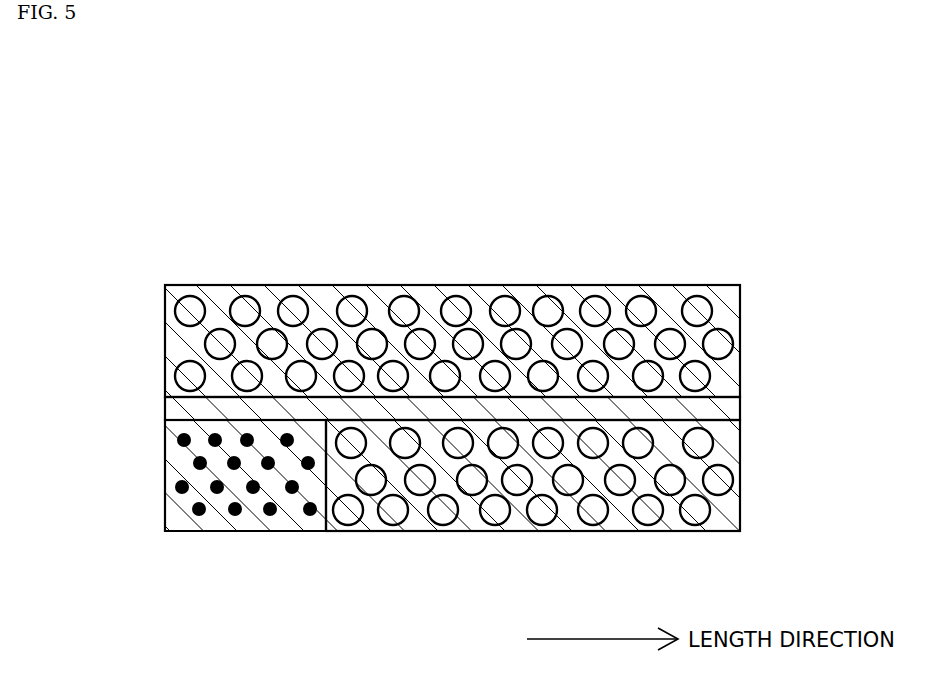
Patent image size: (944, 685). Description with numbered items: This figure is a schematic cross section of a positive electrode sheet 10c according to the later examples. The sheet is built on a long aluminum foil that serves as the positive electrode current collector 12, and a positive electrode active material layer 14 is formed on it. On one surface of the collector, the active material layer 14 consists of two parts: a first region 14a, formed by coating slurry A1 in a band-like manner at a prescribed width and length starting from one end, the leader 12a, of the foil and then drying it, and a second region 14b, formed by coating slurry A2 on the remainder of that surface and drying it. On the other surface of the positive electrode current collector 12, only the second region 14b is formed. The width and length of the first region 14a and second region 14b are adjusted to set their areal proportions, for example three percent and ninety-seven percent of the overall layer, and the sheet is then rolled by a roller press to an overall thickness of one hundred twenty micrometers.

The positive electrode sheet 10c is at (721, 170).
The positive electrode current collector 12 is at (740, 409).
The one end (leader) 12a is at (165, 406).
The positive electrode active material layer 14 is at (455, 409).
The first region 14a is at (324, 542).
The second region 14b is at (738, 273).